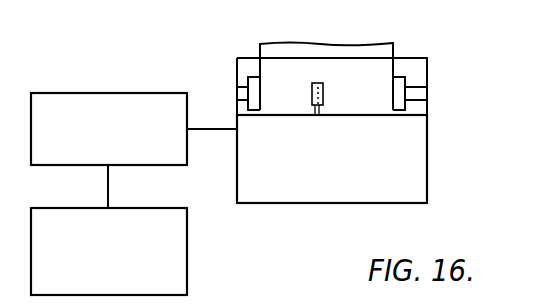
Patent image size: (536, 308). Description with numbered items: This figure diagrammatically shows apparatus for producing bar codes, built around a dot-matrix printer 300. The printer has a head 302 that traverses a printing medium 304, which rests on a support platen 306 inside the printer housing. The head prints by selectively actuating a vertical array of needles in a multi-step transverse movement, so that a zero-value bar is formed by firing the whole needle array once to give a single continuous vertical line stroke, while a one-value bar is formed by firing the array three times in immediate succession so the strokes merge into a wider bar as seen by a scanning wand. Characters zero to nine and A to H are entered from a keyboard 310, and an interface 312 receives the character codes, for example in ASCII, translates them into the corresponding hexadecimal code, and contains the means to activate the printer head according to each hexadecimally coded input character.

The dot-matrix printer 300 is at (428, 160).
The head 302 is at (311, 98).
The printing medium 304 is at (378, 52).
The support platen 306 is at (400, 80).
The keyboard 310 is at (188, 251).
The interface 312 is at (85, 93).